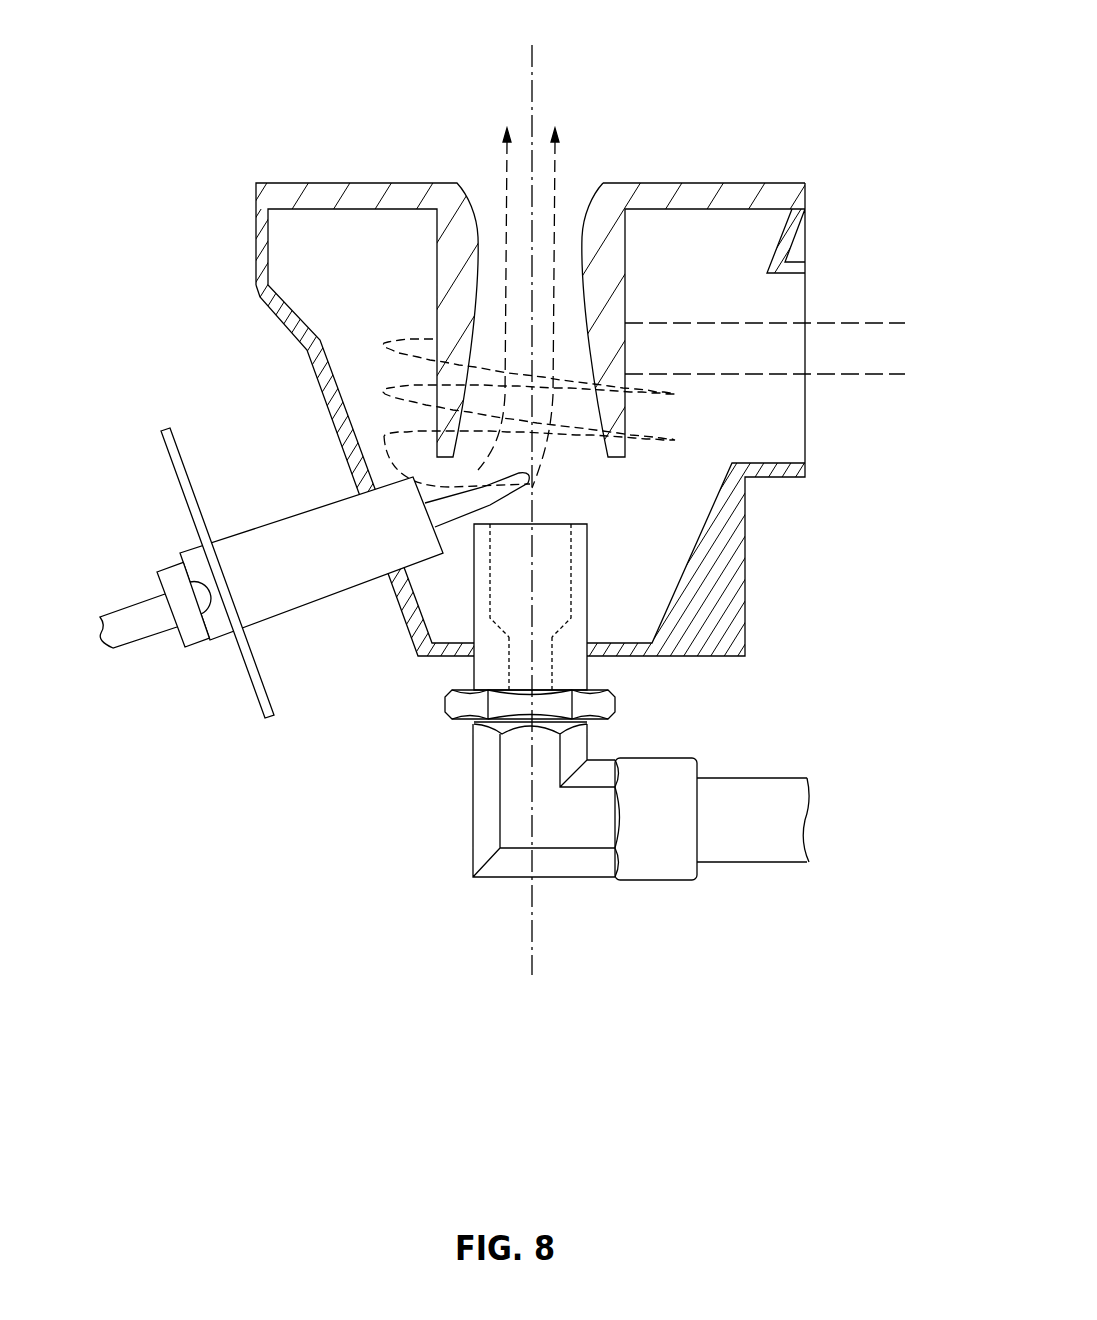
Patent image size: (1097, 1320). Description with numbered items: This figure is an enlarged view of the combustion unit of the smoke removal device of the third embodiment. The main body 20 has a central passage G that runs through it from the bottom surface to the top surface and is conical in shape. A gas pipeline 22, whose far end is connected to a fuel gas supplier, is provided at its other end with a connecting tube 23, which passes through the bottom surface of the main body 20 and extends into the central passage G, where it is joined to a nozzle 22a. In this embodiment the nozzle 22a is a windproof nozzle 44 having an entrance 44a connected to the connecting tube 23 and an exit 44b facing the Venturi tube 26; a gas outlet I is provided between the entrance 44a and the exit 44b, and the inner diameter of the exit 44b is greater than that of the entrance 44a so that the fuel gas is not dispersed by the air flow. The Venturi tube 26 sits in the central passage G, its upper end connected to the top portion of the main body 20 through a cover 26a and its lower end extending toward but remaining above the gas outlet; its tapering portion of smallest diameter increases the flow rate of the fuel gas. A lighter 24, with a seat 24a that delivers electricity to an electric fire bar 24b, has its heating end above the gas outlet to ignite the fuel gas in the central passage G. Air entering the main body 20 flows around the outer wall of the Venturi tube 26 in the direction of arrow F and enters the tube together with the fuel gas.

The main body 20 is at (256, 241).
The Venturi tube 26 is at (625, 253).
The cover 26a is at (745, 183).
The windproof nozzle 44 is at (684, 549).
The nozzle 22a is at (548, 430).
The entrance 44a is at (542, 667).
The exit 44b is at (553, 537).
The gas pipeline 22 is at (753, 777).
The connecting tube 23 is at (583, 878).
The lighter 24 is at (314, 661).
The seat 24a is at (342, 592).
The electric fire bar 24b is at (465, 517).
The arrow F is at (529, 289).
The central passage G is at (532, 490).
The gas outlet I is at (531, 592).